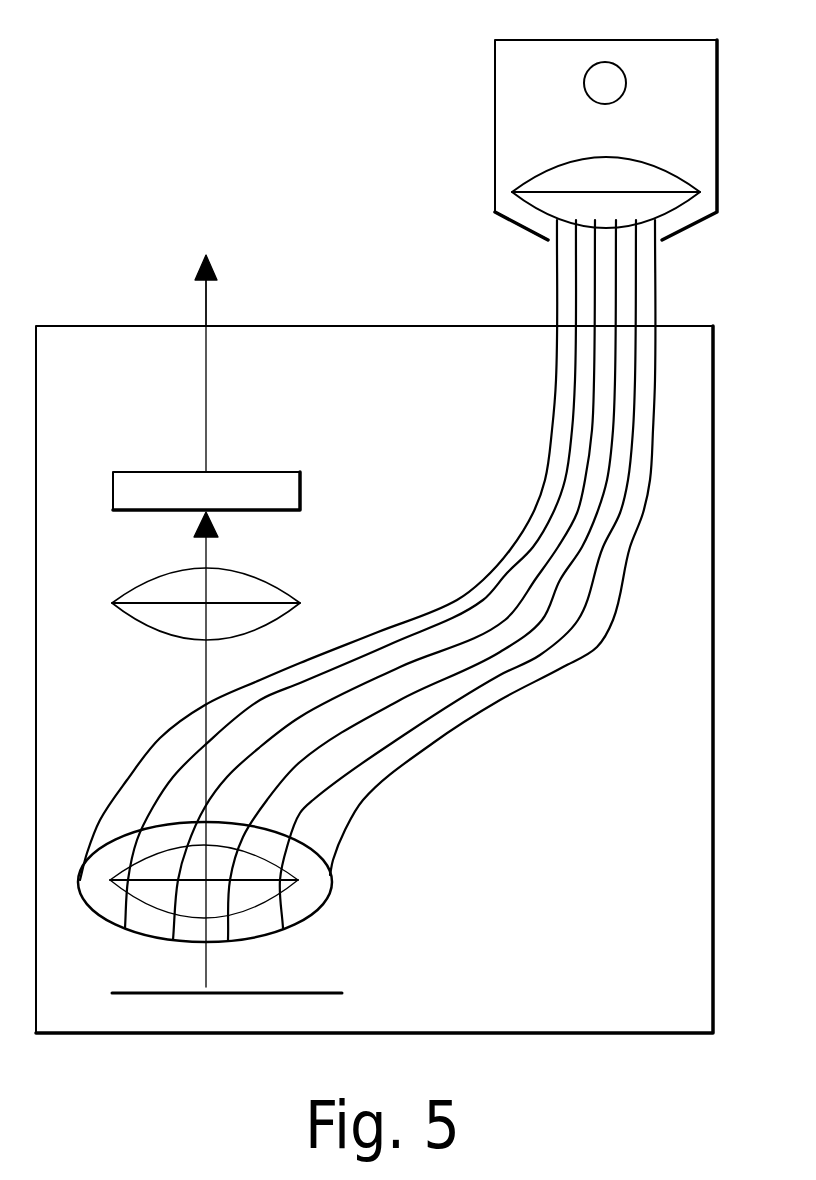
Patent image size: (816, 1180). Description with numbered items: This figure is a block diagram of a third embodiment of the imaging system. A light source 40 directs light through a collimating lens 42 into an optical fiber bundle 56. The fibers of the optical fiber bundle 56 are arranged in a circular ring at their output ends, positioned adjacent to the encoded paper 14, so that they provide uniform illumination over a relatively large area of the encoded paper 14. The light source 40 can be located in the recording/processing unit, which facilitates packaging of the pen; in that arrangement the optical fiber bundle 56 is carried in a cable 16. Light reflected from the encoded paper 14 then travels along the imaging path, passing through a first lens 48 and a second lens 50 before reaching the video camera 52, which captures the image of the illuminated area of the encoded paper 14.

The encoded paper 14 is at (313, 993).
The cable 16 is at (205, 311).
The light source 40 is at (587, 92).
The collimating lens 42 is at (655, 163).
The lens 48 is at (122, 892).
The lens 50 is at (163, 637).
The video camera 52 is at (128, 471).
The optical fiber bundle 56 is at (660, 308).